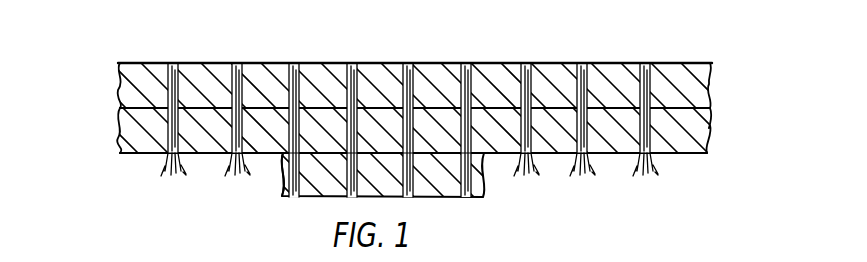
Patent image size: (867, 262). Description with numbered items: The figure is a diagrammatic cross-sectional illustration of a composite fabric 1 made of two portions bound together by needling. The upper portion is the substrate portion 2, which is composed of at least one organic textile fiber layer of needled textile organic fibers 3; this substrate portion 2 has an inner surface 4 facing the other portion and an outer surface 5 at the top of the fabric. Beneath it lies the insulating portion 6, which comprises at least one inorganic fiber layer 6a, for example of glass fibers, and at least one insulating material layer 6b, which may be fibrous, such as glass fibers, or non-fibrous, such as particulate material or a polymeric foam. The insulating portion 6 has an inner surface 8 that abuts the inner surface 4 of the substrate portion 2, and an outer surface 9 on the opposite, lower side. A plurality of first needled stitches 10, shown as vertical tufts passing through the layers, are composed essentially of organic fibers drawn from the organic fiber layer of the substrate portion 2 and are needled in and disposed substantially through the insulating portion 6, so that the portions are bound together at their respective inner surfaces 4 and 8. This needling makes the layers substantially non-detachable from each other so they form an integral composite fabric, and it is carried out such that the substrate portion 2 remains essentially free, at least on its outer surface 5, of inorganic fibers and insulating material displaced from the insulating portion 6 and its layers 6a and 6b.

The fabric 1 is at (659, 58).
The substrate portion 2 is at (710, 82).
The needled textile organic fibers 3 is at (137, 77).
The inner surface 4 is at (137, 123).
The outer surface 5 is at (143, 63).
The insulating portion 6 is at (712, 110).
The inorganic fiber layer 6a is at (146, 134).
The insulating material layer 6b is at (283, 177).
The inner surface 8 is at (612, 112).
The outer surface 9 is at (450, 197).
The first needled stitches 10 is at (295, 63).